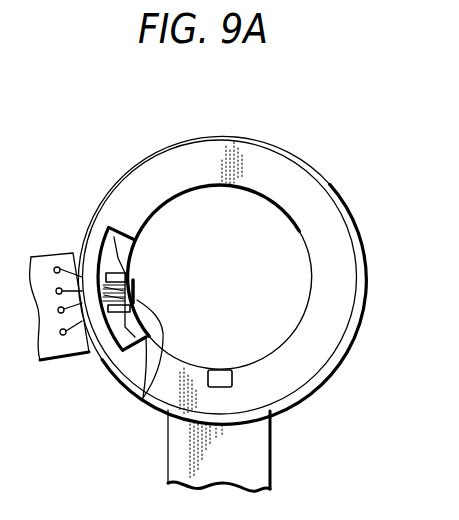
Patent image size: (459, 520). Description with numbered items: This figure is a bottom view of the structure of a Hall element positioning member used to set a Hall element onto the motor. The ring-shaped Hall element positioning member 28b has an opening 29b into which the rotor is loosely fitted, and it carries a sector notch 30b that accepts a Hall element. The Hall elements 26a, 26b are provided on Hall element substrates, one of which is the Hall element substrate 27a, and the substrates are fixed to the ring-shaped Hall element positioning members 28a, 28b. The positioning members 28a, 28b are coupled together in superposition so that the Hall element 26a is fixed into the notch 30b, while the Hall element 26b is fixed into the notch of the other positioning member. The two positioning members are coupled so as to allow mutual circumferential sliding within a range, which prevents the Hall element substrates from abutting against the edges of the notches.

The Hall element 26a is at (143, 398).
The Hall element 26b is at (232, 380).
The Hall element substrate 27a is at (58, 253).
The Hall element positioning member 28a is at (132, 355).
The Hall element positioning member 28b is at (178, 157).
The opening 29b is at (292, 226).
The sector notch 30b is at (113, 230).